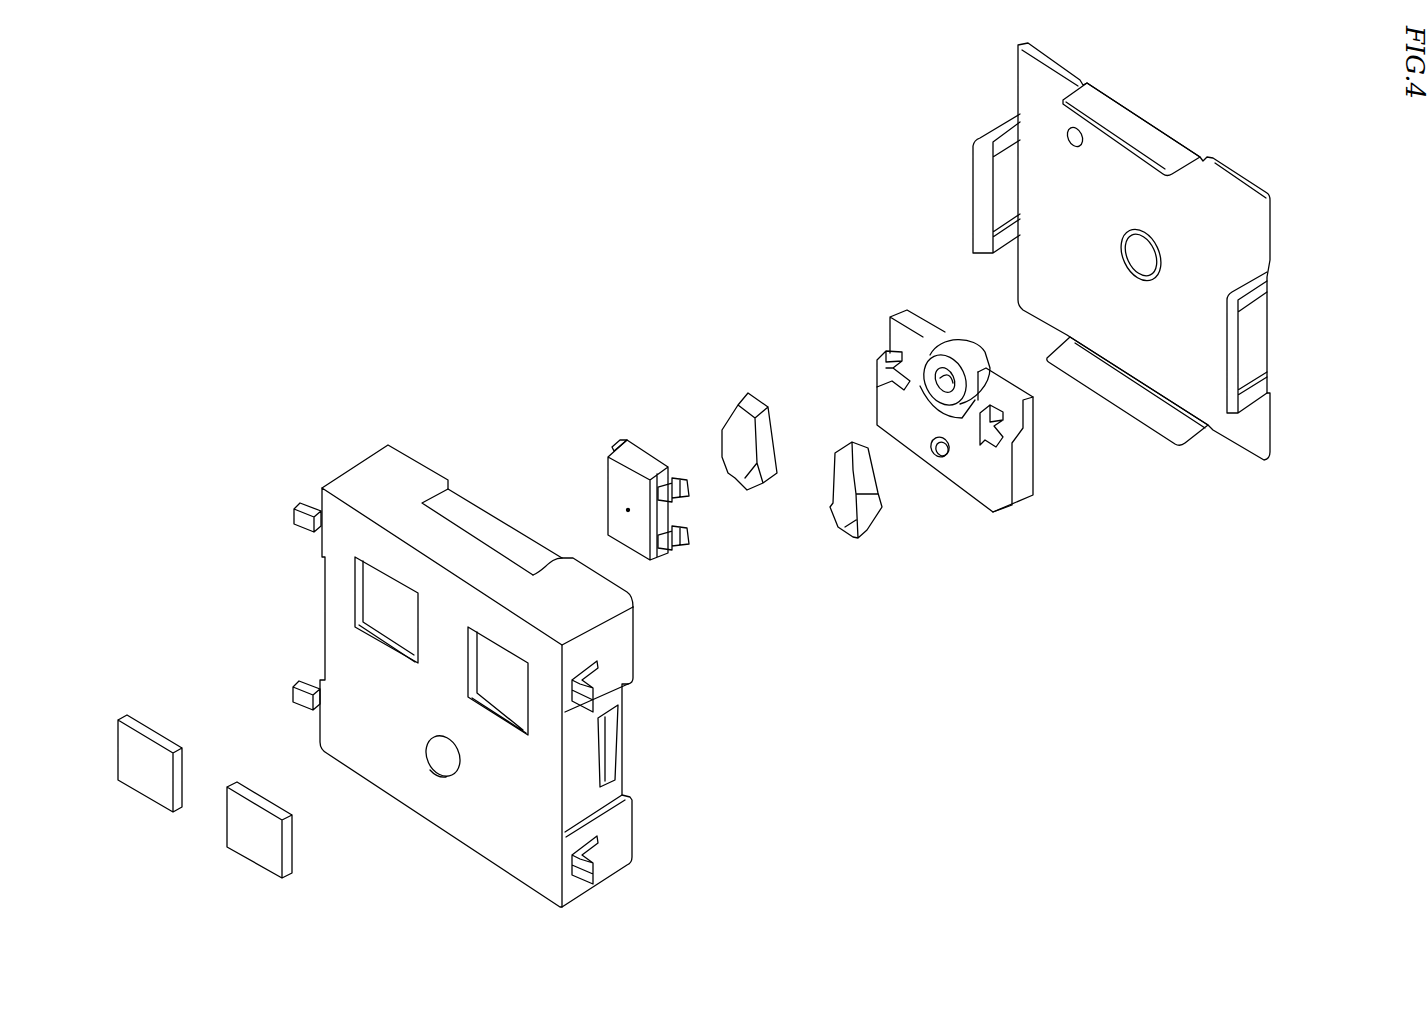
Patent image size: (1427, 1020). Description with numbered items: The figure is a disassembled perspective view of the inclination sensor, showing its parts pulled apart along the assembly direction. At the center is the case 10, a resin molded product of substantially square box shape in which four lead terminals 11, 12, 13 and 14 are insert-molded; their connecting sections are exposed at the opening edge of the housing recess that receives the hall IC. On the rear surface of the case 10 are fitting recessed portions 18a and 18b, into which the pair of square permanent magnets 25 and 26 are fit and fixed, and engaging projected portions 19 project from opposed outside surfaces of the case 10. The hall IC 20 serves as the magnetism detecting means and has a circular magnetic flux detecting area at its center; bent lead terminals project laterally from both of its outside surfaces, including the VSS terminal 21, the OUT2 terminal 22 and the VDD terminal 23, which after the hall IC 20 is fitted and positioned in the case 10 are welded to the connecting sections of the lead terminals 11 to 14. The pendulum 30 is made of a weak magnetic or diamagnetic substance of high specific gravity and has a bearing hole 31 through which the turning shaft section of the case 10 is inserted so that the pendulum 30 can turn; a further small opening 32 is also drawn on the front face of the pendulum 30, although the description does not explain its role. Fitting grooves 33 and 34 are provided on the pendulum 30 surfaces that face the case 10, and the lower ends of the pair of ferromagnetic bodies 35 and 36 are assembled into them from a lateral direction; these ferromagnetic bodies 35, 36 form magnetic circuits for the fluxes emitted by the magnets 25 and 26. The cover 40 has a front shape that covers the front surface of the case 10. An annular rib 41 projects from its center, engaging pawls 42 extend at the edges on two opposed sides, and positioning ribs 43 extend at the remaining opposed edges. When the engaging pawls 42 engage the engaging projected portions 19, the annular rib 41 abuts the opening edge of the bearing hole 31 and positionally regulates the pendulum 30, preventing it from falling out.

The case 10 is at (468, 813).
The lead terminal 11 is at (590, 702).
The lead terminal 12 is at (588, 880).
The lead terminal 13 is at (293, 515).
The lead terminal 14 is at (293, 692).
The fitting recessed portion 18a is at (503, 678).
The fitting recessed portion 18b is at (388, 610).
The engaging projected portion 19 is at (612, 747).
The hall IC 20 is at (620, 483).
The VSS terminal 21 is at (690, 493).
The OUT2 terminal 22 is at (690, 543).
The VDD terminal 23 is at (615, 440).
The permanent magnet 25 is at (255, 820).
The permanent magnet 26 is at (148, 753).
The pendulum 30 is at (1023, 460).
The bearing hole 31 is at (940, 375).
The hole 32 is at (947, 455).
The fitting groove 33 is at (998, 440).
The fitting groove 34 is at (892, 380).
The ferromagnetic body 35 is at (845, 537).
The ferromagnetic body 36 is at (735, 423).
The cover 40 is at (1237, 202).
The annular rib 41 is at (1161, 250).
The engaging pawl 42 is at (980, 188).
The positioning rib 43 is at (1140, 130).